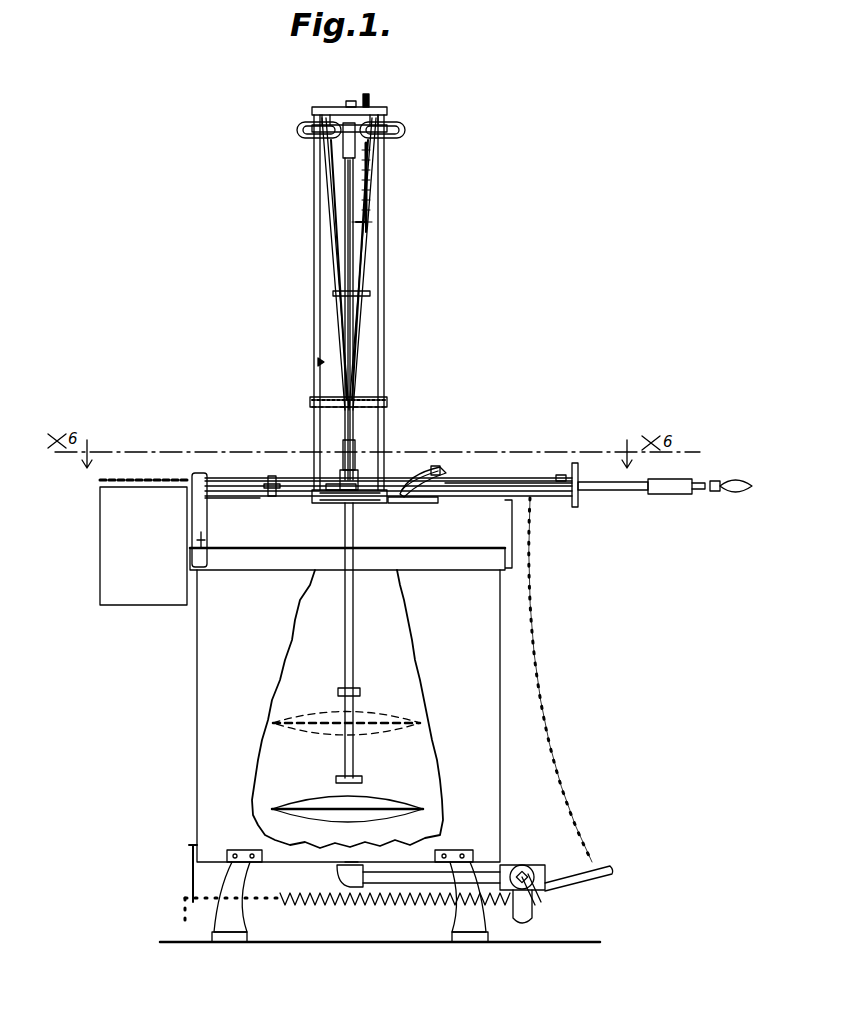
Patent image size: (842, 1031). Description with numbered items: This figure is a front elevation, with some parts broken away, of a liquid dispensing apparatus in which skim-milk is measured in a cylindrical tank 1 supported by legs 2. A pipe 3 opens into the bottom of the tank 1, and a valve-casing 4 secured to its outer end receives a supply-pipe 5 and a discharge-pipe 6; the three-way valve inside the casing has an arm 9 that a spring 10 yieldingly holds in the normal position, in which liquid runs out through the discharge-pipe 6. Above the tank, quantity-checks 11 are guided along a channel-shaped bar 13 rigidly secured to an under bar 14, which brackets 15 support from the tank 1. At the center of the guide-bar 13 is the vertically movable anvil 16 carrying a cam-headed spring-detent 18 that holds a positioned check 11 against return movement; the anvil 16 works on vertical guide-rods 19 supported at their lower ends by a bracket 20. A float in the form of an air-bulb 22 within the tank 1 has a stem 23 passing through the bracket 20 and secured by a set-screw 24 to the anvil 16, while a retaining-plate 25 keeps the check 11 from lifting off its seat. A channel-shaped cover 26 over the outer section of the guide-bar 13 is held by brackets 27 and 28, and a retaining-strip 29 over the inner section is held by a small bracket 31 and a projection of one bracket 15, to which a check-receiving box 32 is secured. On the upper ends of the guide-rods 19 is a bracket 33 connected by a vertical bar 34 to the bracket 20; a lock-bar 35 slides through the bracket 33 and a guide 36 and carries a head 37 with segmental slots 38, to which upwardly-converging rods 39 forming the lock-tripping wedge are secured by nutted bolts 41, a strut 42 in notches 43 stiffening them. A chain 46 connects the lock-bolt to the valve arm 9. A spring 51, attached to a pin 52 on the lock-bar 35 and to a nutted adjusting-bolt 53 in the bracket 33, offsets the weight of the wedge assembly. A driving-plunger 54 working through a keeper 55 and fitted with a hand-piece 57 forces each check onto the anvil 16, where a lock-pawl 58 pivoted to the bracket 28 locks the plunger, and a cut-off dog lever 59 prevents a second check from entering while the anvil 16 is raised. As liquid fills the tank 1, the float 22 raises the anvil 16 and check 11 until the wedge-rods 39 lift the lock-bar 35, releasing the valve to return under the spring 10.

The tank 1 is at (207, 715).
The legs 2 is at (240, 928).
The pipe 3 is at (390, 880).
The valve-casing 4 is at (512, 868).
The supply-pipe 5 is at (534, 918).
The discharge-pipe 6 is at (606, 872).
The arm 9 is at (540, 876).
The spring 10 is at (345, 898).
The quantity-checks 11 is at (312, 397).
The channel-shaped bar or rod 13 is at (242, 493).
The under bar 14 is at (297, 492).
The brackets 15 is at (199, 500).
The anvil 16 is at (320, 492).
The cam-headed spring-detent 18 is at (390, 397).
The vertical guide-rods 19 is at (320, 362).
The bracket 20 is at (342, 496).
The air-bulb 22 is at (378, 805).
The stem 23 is at (352, 672).
The set-screw 24 is at (366, 498).
The retaining-plate 25 is at (334, 480).
The channel-shaped cover 26 is at (500, 485).
The bracket 27 is at (576, 470).
The bracket 28 is at (440, 468).
The retaining-strip 29 is at (240, 480).
The small bracket 31 is at (274, 478).
The check-receiving box 32 is at (112, 550).
The bracket 33 is at (387, 113).
The vertical bar 34 is at (338, 219).
The lock-bar 35 is at (345, 318).
The guide 36 is at (356, 438).
The head 37 is at (303, 135).
The segmental slots 38 is at (318, 147).
The upwardly-converging rods 39 is at (360, 350).
The nutted bolts 41 is at (398, 133).
The strut 42 is at (370, 293).
The notches 43 is at (336, 250).
The chain 46 is at (548, 668).
The spring 51 is at (368, 205).
The pin 52 is at (362, 228).
The nutted adjusting-bolt 53 is at (370, 100).
The driving-plunger 54 is at (706, 482).
The keeper 55 is at (670, 494).
The hand-piece 57 is at (735, 481).
The lock-pawl 58 is at (418, 478).
The lever 59 is at (420, 496).